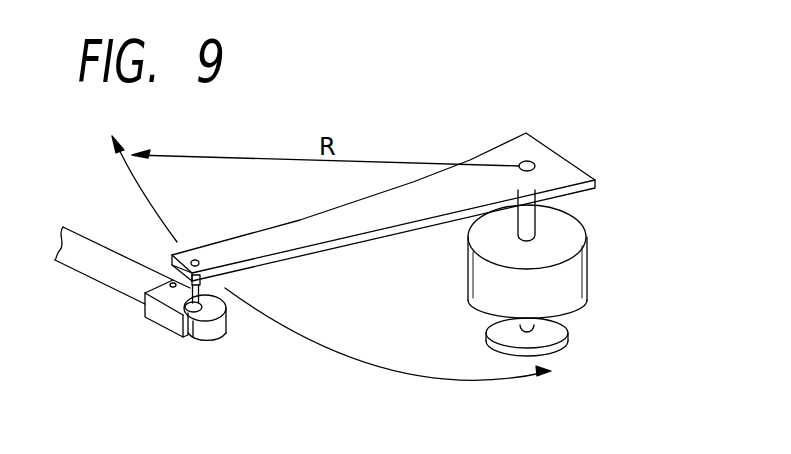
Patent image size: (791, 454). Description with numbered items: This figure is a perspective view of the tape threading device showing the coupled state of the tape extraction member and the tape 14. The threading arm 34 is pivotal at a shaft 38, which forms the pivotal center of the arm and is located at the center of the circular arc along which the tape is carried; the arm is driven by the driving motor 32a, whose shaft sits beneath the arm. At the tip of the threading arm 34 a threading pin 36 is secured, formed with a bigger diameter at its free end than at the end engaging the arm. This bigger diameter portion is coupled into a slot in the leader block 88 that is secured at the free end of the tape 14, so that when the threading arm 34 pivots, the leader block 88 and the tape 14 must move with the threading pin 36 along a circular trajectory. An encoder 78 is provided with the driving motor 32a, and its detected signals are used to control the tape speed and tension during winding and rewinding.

The tape 14 is at (92, 272).
The threading arm 34 is at (508, 147).
The threading pin 36 is at (153, 317).
The shaft 38 is at (534, 163).
The leader block 88 is at (170, 327).
The driving motor 32a is at (577, 290).
The encoder 78 is at (558, 334).